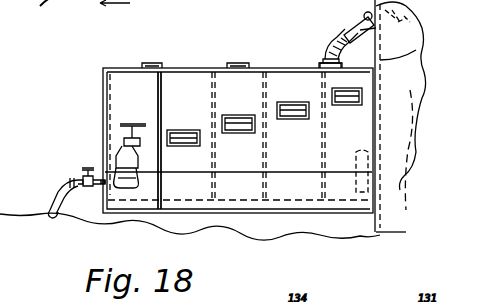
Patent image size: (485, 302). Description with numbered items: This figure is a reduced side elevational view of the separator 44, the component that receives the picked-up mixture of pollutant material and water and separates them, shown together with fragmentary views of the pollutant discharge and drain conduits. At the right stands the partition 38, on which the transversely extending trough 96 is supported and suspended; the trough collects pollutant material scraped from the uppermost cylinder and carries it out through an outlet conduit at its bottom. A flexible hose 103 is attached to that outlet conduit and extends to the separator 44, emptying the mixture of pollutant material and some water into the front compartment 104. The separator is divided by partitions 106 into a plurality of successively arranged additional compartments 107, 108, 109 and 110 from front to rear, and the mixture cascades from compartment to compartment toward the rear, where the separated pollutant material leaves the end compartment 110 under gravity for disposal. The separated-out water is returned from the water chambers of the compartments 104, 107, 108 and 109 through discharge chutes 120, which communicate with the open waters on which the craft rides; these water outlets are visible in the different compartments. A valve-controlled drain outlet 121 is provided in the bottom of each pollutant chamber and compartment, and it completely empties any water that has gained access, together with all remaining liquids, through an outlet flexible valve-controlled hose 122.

The partition 38 is at (397, 44).
The separator 44 is at (295, 65).
The trough 96 is at (364, 20).
The flexible hose 103 is at (325, 44).
The front compartment 104 is at (346, 127).
The partitions 106 is at (160, 95).
The compartment 107 is at (293, 134).
The compartment 108 is at (238, 140).
The compartment 109 is at (183, 148).
The end compartment 110 is at (135, 136).
The discharge chutes 120 is at (308, 88).
The valve-controlled drain outlet 121 is at (82, 162).
The outlet flexible valve-controlled hoses 122 is at (50, 188).